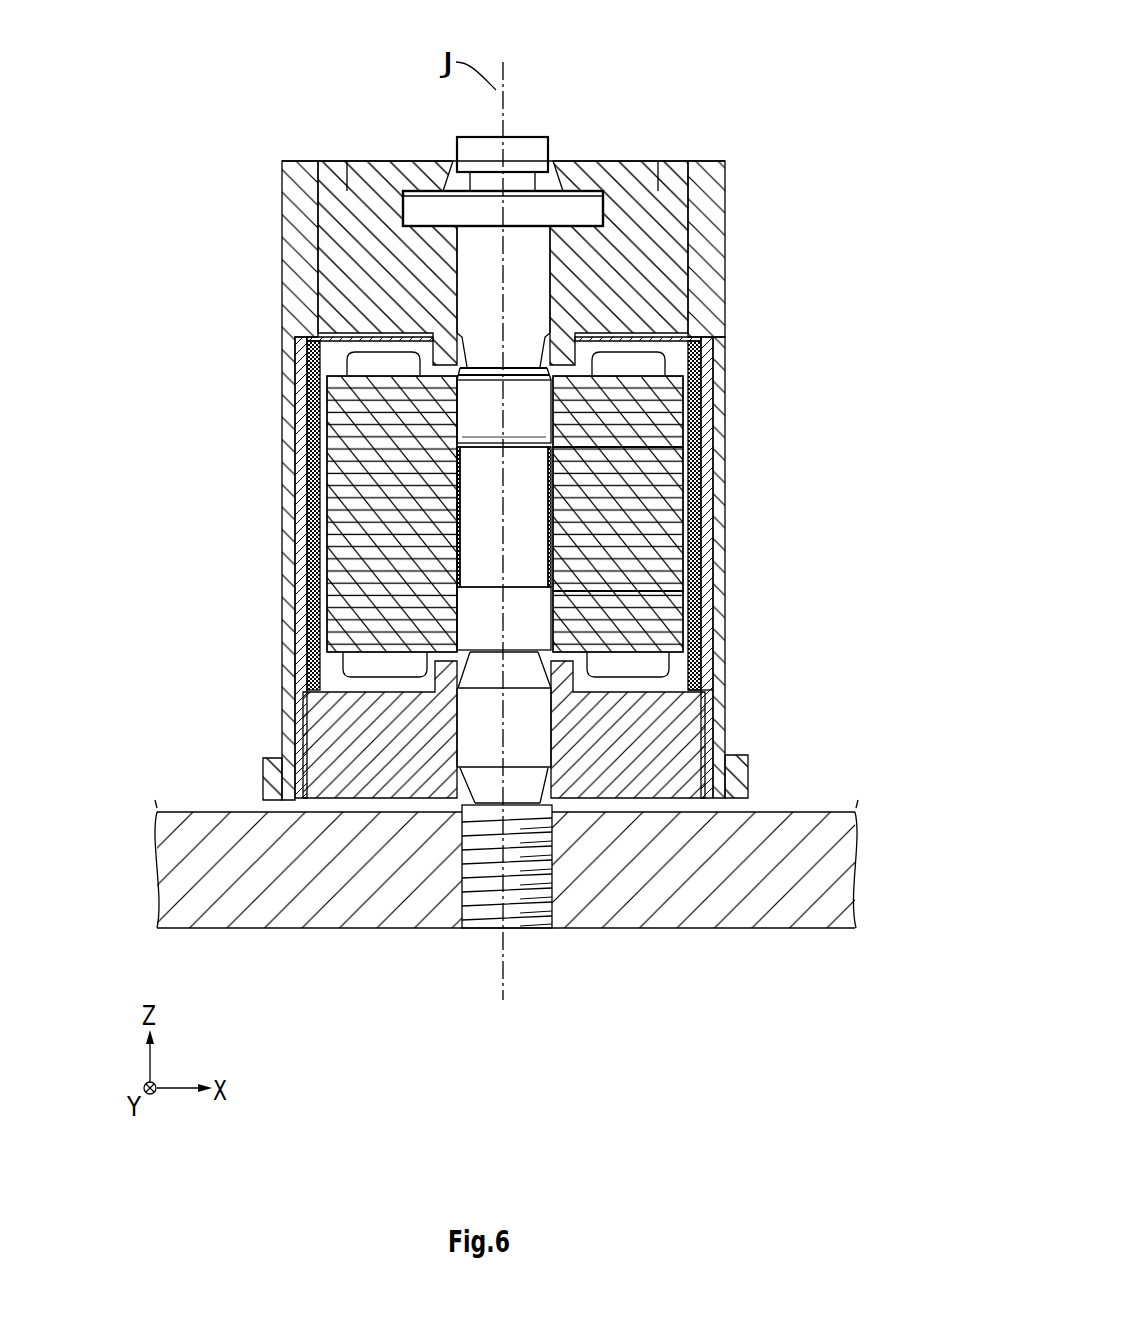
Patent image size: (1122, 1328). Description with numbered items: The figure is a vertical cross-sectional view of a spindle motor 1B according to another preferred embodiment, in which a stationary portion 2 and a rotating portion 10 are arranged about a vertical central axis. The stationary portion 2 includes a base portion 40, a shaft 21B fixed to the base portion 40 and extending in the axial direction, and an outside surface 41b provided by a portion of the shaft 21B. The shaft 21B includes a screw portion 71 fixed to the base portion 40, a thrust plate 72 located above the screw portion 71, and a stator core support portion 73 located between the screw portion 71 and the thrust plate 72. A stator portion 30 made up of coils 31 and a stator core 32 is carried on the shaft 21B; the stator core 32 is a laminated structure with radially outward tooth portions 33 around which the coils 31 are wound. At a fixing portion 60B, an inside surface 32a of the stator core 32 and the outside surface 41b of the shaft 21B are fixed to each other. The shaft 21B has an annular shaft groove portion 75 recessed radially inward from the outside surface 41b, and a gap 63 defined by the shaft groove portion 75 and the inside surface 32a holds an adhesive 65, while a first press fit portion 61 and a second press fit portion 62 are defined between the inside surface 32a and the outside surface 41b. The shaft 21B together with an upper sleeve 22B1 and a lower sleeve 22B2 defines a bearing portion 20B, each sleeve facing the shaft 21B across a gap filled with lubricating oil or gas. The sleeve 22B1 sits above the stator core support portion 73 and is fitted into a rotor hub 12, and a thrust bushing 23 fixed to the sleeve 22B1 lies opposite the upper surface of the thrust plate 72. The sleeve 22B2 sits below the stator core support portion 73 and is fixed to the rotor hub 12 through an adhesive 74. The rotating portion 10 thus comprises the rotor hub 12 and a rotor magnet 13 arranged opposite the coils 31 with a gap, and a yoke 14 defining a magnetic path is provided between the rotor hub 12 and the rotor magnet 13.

The spindle motor 1B is at (202, 80).
The rotating portion 10 is at (276, 160).
The rotor hub 12 is at (720, 268).
The rotor magnet 13 is at (714, 574).
The yoke 14 is at (700, 533).
The stationary portion 2 is at (752, 944).
The bearing portion 20B is at (561, 176).
The shaft 21B is at (470, 527).
The sleeve 22B1 is at (694, 251).
The sleeve 22B2 is at (712, 739).
The thrust bushing 23 is at (605, 161).
The stator portion 30 is at (314, 388).
The coils 31 is at (384, 340).
The stator core 32 is at (350, 334).
The inside surface 32a is at (553, 380).
The tooth portions 33 is at (320, 467).
The base portion 40 is at (663, 928).
The outside surface 41b is at (572, 437).
The fixing portion 60B is at (692, 485).
The first press fit portion 61 is at (700, 648).
The second press fit portion 62 is at (572, 397).
The gap 63 is at (572, 507).
The adhesive 65 is at (694, 559).
The screw portion 71 is at (449, 878).
The thrust plate 72 is at (392, 206).
The stator core support portion 73 is at (442, 620).
The adhesive 74 is at (713, 748).
The shaft groove portion 75 is at (572, 620).